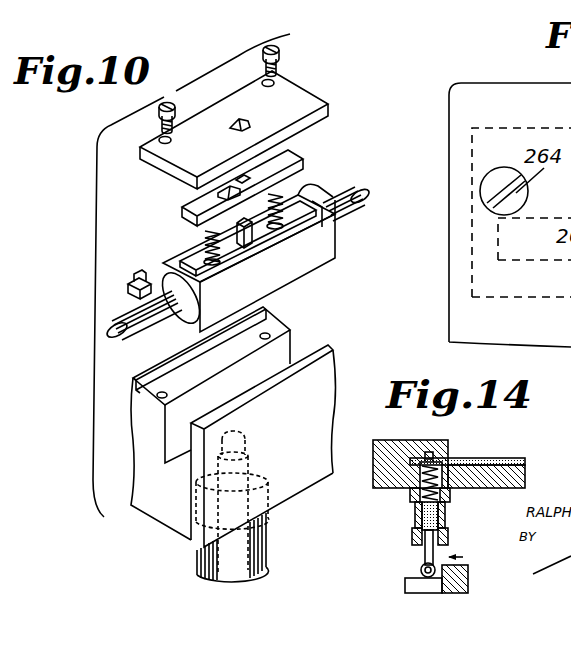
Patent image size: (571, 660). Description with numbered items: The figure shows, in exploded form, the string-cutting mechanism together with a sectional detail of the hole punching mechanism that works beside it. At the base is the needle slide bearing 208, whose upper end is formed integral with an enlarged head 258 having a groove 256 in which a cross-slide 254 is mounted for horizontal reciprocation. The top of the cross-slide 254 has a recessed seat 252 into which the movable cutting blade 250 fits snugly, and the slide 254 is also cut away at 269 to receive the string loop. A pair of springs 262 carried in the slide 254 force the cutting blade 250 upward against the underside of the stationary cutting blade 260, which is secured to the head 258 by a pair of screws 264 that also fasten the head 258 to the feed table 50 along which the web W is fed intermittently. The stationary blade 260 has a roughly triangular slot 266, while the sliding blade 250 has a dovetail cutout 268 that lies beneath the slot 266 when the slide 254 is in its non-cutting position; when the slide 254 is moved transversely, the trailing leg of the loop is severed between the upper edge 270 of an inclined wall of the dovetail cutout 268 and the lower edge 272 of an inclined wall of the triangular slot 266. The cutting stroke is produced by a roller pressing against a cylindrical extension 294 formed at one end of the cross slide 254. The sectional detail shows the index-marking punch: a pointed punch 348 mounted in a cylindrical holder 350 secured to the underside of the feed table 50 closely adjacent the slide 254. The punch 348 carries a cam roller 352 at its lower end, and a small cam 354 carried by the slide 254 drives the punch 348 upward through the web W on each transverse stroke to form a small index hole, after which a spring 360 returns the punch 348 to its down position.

In FIG. 10, the needle slide bearing 208 is at (258, 551).
In FIG. 10, the cutting blade 250 is at (304, 160).
In FIG. 10, the recessed seat 252 is at (290, 212).
In FIG. 10, the cross-slide 254 is at (300, 271).
In FIG. 10, the groove 256 is at (283, 355).
In FIG. 10, the enlarged head 258 is at (312, 419).
In FIG. 10, the stationary cutting blade 260 is at (306, 98).
In FIG. 10, the springs 262 is at (204, 240).
In FIG. 10, the screws 264 is at (240, 72).
In FIG. 10, the triangular slot 266 is at (251, 118).
In FIG. 10, the dovetail cutout 268 is at (216, 193).
In FIG. 10, the cut-away 269 is at (240, 241).
In FIG. 10, the upper edge 270 is at (256, 168).
In FIG. 10, the lower edge 272 is at (234, 124).
In FIG. 10, the cylindrical extension 294 is at (363, 193).
In FIG. 10, the cam 354 is at (133, 282).
In FIG. 14, the cam 354 is at (426, 588).
In FIG. 14, the pointed punch 348 is at (439, 460).
In FIG. 14, the cylindrical holder 350 is at (446, 513).
In FIG. 14, the cam roller 352 is at (422, 564).
In FIG. 14, the spring 360 is at (418, 498).
In FIG. 14, the feed table 50 is at (524, 473).
In FIG. 14, the web W is at (514, 460).